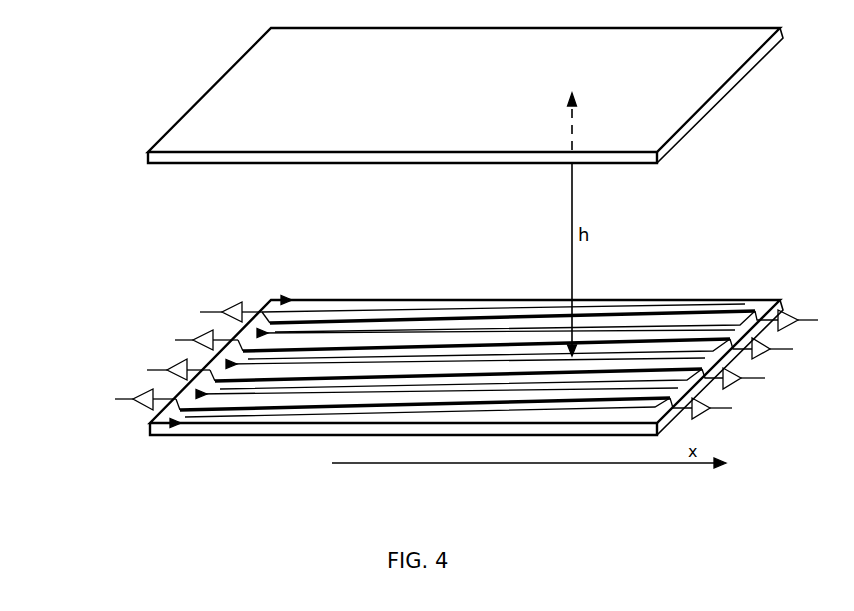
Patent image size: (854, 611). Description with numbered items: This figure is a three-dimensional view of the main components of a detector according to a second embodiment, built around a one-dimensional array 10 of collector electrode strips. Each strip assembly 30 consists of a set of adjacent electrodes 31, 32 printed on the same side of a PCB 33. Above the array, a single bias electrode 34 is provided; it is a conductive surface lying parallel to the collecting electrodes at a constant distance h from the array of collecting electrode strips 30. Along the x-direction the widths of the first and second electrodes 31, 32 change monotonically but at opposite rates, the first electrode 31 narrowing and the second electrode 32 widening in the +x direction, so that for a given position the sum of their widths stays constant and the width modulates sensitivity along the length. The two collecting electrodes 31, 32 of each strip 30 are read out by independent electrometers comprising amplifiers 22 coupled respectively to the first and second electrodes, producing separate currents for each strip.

The 1D array of collector electrode strips 10 is at (427, 357).
The amplifier 22 is at (143, 390).
The strip assembly 30 is at (208, 390).
The first electrode 31 is at (368, 402).
The second electrode 32 is at (647, 380).
The PCB 33 is at (228, 427).
The bias electrode 34 is at (242, 90).